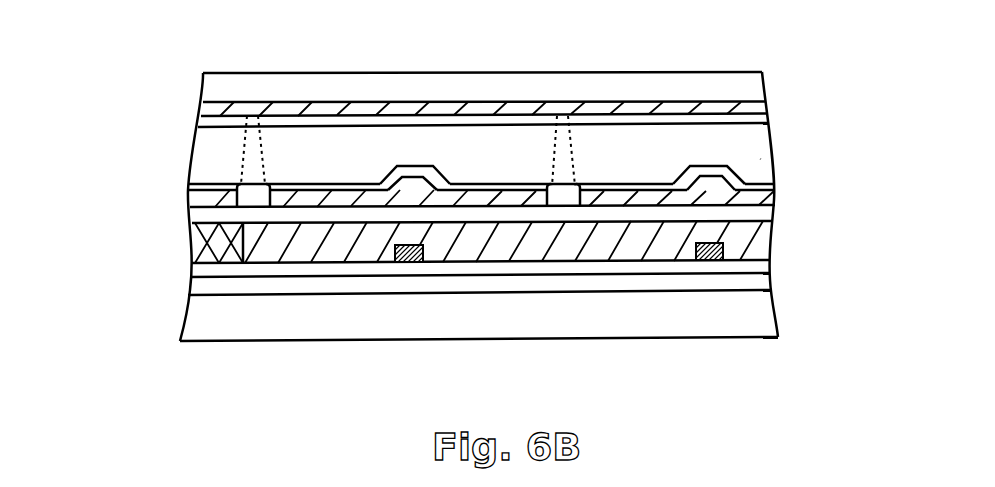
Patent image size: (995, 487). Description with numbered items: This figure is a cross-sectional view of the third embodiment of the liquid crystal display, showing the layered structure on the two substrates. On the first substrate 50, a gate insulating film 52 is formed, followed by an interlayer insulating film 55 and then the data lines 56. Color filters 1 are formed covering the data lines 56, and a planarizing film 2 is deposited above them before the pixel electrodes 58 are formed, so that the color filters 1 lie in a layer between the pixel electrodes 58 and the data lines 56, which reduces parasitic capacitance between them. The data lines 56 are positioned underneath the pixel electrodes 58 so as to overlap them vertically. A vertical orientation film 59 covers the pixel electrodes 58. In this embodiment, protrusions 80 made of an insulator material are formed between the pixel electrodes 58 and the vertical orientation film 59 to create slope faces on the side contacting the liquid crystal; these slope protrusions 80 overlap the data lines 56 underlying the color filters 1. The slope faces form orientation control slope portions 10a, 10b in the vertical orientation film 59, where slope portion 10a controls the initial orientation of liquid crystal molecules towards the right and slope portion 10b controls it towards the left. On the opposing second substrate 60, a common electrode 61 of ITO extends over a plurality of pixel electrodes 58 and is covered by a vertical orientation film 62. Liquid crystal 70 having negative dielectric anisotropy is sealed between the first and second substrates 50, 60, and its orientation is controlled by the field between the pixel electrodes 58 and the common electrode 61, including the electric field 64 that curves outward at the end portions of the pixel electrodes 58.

The color filter 1 is at (756, 240).
The planarizing film 2 is at (770, 214).
The orientation control slope portion 10a is at (386, 173).
The orientation control slope portion 10b is at (442, 170).
The first substrate 50 is at (768, 316).
The gate insulating film 52 is at (766, 285).
The interlayer insulating film 55 is at (764, 265).
The data line 56 is at (415, 262).
The pixel electrode 58 is at (772, 205).
The vertical orientation film 59 is at (768, 186).
The second substrate 60 is at (752, 84).
The common electrode 61 is at (752, 106).
The vertical orientation film 62 is at (755, 119).
The electric field 64 is at (264, 147).
The liquid crystal 70 is at (758, 157).
The protrusion 80 is at (428, 172).